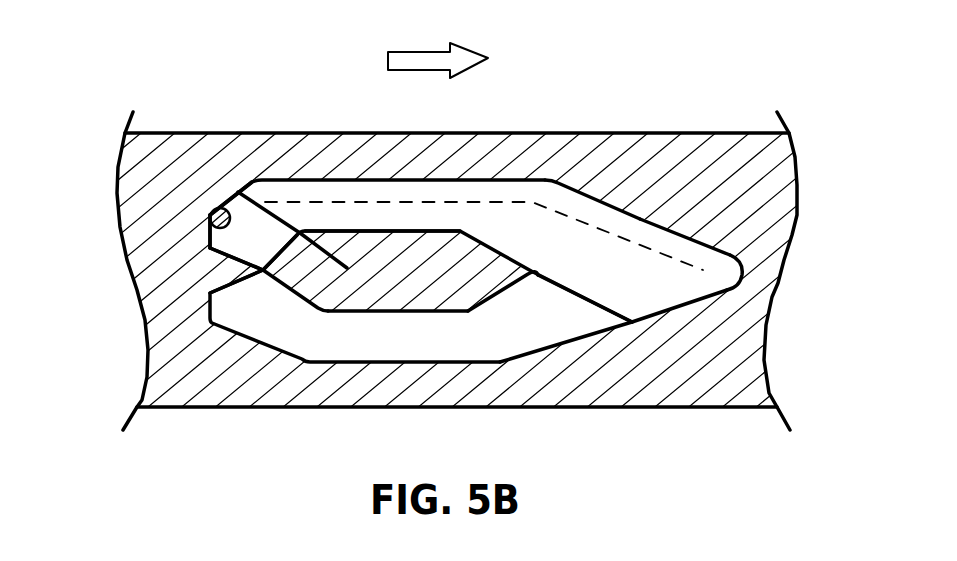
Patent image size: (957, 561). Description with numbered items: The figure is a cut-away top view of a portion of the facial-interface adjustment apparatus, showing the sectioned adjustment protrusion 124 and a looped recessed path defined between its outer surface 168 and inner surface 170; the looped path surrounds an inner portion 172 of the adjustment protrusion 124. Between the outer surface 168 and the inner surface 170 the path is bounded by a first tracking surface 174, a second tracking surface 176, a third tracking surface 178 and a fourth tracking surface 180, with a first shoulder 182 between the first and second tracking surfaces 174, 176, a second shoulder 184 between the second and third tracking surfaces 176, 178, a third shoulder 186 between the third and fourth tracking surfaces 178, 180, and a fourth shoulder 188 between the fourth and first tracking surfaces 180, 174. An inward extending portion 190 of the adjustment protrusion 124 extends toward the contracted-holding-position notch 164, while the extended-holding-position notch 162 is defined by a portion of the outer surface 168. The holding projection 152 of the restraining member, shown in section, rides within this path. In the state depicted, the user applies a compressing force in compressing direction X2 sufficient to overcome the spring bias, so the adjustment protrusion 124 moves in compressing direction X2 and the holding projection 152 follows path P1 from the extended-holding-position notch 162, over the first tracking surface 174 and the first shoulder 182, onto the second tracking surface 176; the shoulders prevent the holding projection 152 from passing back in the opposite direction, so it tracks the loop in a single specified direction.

The adjustment protrusion 124 is at (152, 142).
The holding projection 152 is at (211, 218).
The extended-holding-position notch 162 is at (741, 289).
The contracted-holding-position notch 164 is at (356, 262).
The outer surface 168 is at (636, 221).
The inner surface 170 is at (402, 313).
The inner portion 172 is at (470, 301).
The first tracking surface 174 is at (563, 222).
The second tracking surface 176 is at (232, 242).
The third tracking surface 178 is at (307, 256).
The fourth tracking surface 180 is at (551, 324).
The first shoulder 182 is at (239, 204).
The second shoulder 184 is at (274, 258).
The third shoulder 186 is at (290, 266).
The fourth shoulder 188 is at (598, 298).
The inward extending portion 190 is at (230, 275).
The path P1 is at (517, 196).
The compressing direction X2 is at (438, 48).